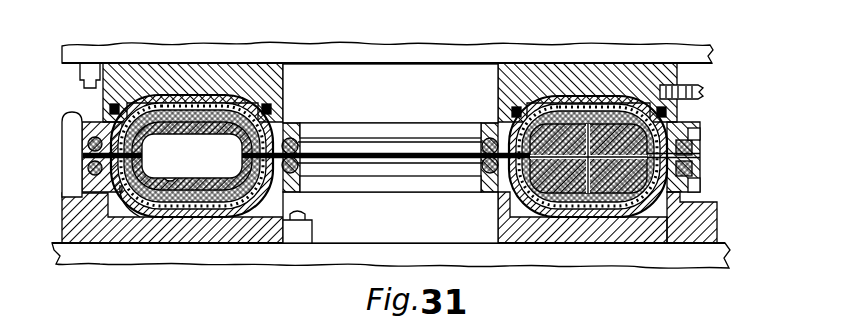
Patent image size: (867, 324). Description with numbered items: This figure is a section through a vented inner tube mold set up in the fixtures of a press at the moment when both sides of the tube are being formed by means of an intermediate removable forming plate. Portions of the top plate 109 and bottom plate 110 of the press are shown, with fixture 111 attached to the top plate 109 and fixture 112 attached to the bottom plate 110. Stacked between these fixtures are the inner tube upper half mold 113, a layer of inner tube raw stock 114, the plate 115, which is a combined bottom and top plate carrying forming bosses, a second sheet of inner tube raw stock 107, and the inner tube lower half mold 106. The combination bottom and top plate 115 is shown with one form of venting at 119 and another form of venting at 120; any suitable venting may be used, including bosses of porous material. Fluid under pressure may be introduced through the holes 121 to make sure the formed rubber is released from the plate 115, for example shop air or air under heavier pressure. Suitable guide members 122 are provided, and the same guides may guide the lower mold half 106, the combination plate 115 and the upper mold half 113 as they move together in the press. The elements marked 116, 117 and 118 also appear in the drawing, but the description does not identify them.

The inner tube lower half mold 106 is at (702, 184).
The inner tube raw stock 107 is at (665, 224).
The top plate 109 is at (455, 50).
The bottom plate 110 is at (562, 262).
The fixture 111 is at (285, 90).
The fixture 112 is at (498, 218).
The inner tube upper half mold 113 is at (702, 133).
The inner tube raw stock 114 is at (676, 124).
The combination bottom and top plate 115 is at (734, 141).
The sealing rings 116 is at (300, 148).
The bolt 117 is at (697, 90).
The seal 118 is at (116, 100).
The venting 119 is at (170, 181).
The venting 120 is at (624, 208).
The holes 121 is at (700, 160).
The guide members 122 is at (70, 165).